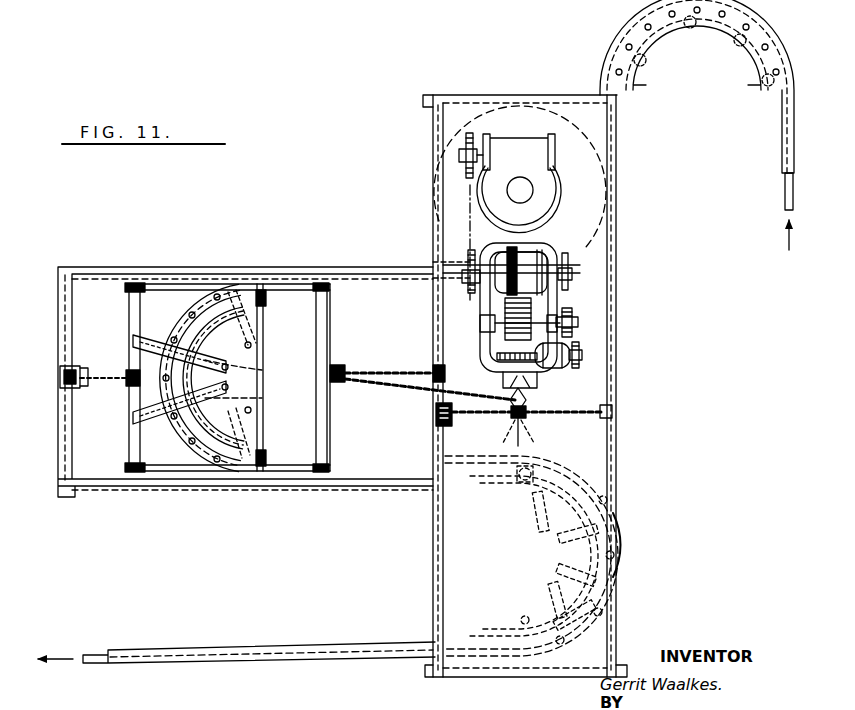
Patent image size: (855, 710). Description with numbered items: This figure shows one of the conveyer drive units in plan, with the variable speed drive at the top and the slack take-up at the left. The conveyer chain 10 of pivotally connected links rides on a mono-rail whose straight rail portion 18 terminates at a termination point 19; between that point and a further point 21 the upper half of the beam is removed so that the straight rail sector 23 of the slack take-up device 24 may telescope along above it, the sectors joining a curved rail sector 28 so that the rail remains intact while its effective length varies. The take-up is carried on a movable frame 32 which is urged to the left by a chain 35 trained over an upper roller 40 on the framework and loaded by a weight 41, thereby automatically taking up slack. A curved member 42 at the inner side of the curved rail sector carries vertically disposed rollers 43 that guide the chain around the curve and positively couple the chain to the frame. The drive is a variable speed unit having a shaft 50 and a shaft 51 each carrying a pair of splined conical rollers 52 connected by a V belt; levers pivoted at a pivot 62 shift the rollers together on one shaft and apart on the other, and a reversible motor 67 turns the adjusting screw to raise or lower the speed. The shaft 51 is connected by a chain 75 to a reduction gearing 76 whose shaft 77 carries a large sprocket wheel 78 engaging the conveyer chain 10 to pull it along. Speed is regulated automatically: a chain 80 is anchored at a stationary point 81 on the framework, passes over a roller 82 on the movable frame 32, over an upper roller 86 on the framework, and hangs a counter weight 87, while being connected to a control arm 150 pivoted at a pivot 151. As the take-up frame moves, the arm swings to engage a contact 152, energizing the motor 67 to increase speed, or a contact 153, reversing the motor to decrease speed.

The conveyer chain 10 is at (782, 182).
The straight rail portion 18 is at (447, 484).
The termination point 19 is at (352, 283).
The point 21 is at (490, 460).
The straight rail sector 23 is at (265, 456).
The slack take-up device 24 is at (185, 321).
The curved rail sector 28 is at (136, 416).
The frame 32 is at (135, 444).
The chain 35 is at (106, 383).
The upper roller 40 is at (60, 377).
The weight 41 is at (82, 368).
The curved member 42 is at (215, 362).
The rollers 43 is at (240, 398).
The shaft 50 is at (500, 330).
The shaft 51 is at (502, 298).
The conical roller 52 is at (498, 335).
The pivot 62 is at (480, 323).
The reversible motor 67 is at (575, 363).
The chain 75 is at (470, 203).
The reduction gearing 76 is at (548, 162).
The shaft 77 is at (530, 196).
The sprocket wheel 78 is at (440, 148).
The chain 80 is at (380, 380).
The stationary point 81 is at (434, 366).
The roller 82 is at (338, 366).
The upper roller 86 is at (436, 426).
The counter weight 87 is at (438, 411).
The control arm 150 is at (530, 442).
The pivot 151 is at (530, 402).
The contact 152 is at (536, 380).
The contact 153 is at (500, 380).